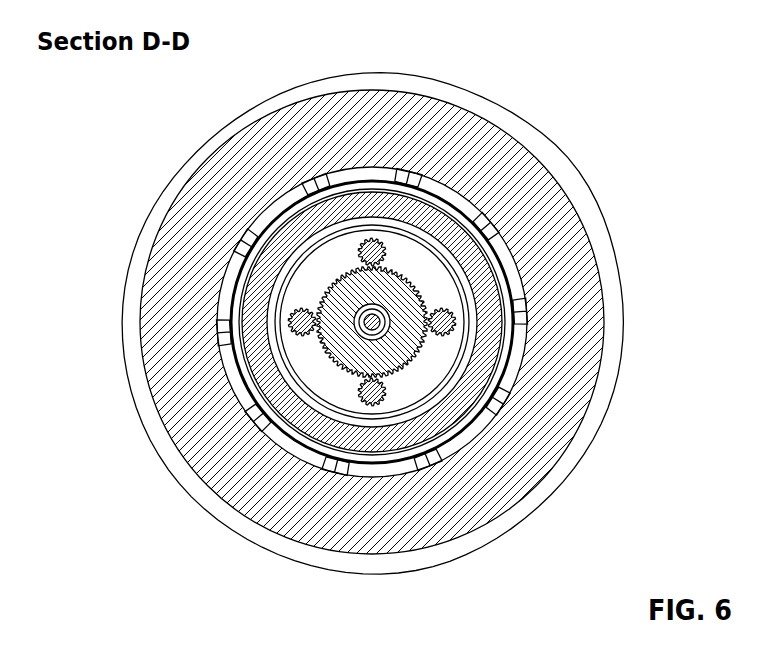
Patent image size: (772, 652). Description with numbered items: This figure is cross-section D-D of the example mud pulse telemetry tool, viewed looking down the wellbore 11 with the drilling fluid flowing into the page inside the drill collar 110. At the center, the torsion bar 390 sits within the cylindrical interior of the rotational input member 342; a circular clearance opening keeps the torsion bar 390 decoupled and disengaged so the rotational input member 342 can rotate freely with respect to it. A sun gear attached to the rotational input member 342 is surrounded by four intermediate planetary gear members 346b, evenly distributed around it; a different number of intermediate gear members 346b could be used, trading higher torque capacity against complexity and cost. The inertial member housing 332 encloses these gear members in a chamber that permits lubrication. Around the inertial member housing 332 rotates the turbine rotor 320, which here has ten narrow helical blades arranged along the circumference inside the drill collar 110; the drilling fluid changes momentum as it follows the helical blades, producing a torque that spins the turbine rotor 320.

The wellbore 11 is at (515, 118).
The drill collar 110 is at (185, 230).
The turbine rotor 320 is at (518, 343).
The inertial member housing 332 is at (461, 408).
The rotational input member 342 is at (393, 292).
The intermediate planetary gear members 346b is at (374, 244).
The torsion bar 390 is at (366, 310).